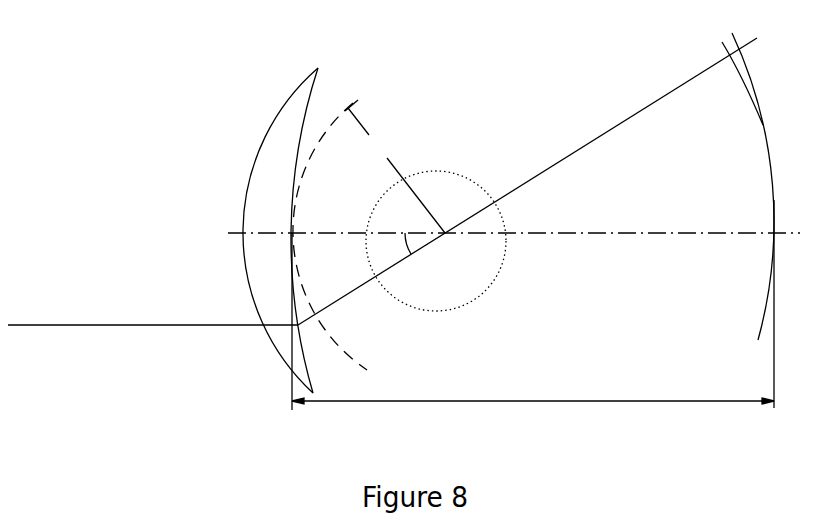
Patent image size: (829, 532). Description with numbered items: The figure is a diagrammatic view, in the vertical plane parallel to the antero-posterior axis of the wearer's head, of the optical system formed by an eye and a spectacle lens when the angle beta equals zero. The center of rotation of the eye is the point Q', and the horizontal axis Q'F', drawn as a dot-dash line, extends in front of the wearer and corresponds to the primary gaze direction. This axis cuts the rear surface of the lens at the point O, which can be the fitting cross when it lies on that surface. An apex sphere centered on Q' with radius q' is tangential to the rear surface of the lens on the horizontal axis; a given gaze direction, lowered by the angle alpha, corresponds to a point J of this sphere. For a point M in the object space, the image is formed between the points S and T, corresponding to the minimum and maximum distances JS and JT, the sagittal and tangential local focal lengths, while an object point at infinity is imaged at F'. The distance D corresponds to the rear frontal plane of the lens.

The point in the object space M is at (30, 318).
The point of intersection of the rear surface of the lens and the axis Q'F' O is at (280, 230).
The center of rotation of the eye Q' is at (436, 241).
The radius of the apex sphere q' is at (395, 166).
The point of the apex sphere J is at (330, 236).
The tangential image point T is at (723, 81).
The sagittal image point S is at (753, 180).
The point F' on the primary gaze axis F' is at (759, 304).